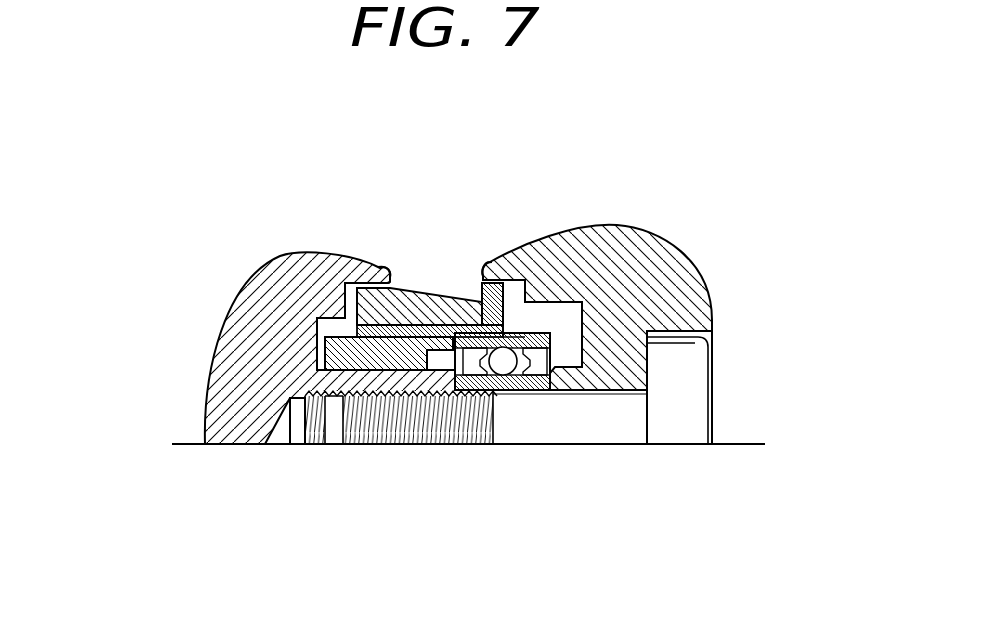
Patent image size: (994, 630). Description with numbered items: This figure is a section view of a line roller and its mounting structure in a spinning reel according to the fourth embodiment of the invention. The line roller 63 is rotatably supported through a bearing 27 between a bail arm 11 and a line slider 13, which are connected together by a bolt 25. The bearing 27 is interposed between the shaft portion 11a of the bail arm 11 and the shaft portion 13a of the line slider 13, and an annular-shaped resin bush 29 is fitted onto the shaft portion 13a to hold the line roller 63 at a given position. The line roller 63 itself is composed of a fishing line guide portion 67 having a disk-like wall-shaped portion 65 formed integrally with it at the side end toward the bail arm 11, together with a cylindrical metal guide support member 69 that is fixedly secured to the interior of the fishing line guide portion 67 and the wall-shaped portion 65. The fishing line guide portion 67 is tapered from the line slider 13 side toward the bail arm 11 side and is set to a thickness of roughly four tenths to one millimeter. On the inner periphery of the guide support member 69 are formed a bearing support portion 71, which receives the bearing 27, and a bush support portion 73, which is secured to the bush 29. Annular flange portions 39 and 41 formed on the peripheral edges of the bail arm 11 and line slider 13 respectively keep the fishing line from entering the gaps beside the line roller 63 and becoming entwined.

The bail arm 11 is at (722, 311).
The shaft portion of the bail arm 11a is at (563, 390).
The line slider 13 is at (205, 388).
The shaft portion of the line slider 13a is at (388, 383).
The bolt 25 is at (705, 395).
The bearing 27 is at (520, 391).
The resin bush 29 is at (318, 350).
The flange portion 39 is at (487, 273).
The flange portion 41 is at (382, 268).
The line roller 63 is at (421, 280).
The wall-shaped portion 65 is at (505, 282).
The fishing line guide portion 67 is at (399, 335).
The guide support member 69 is at (508, 327).
The bearing support portion 71 is at (477, 388).
The bush support portion 73 is at (340, 318).